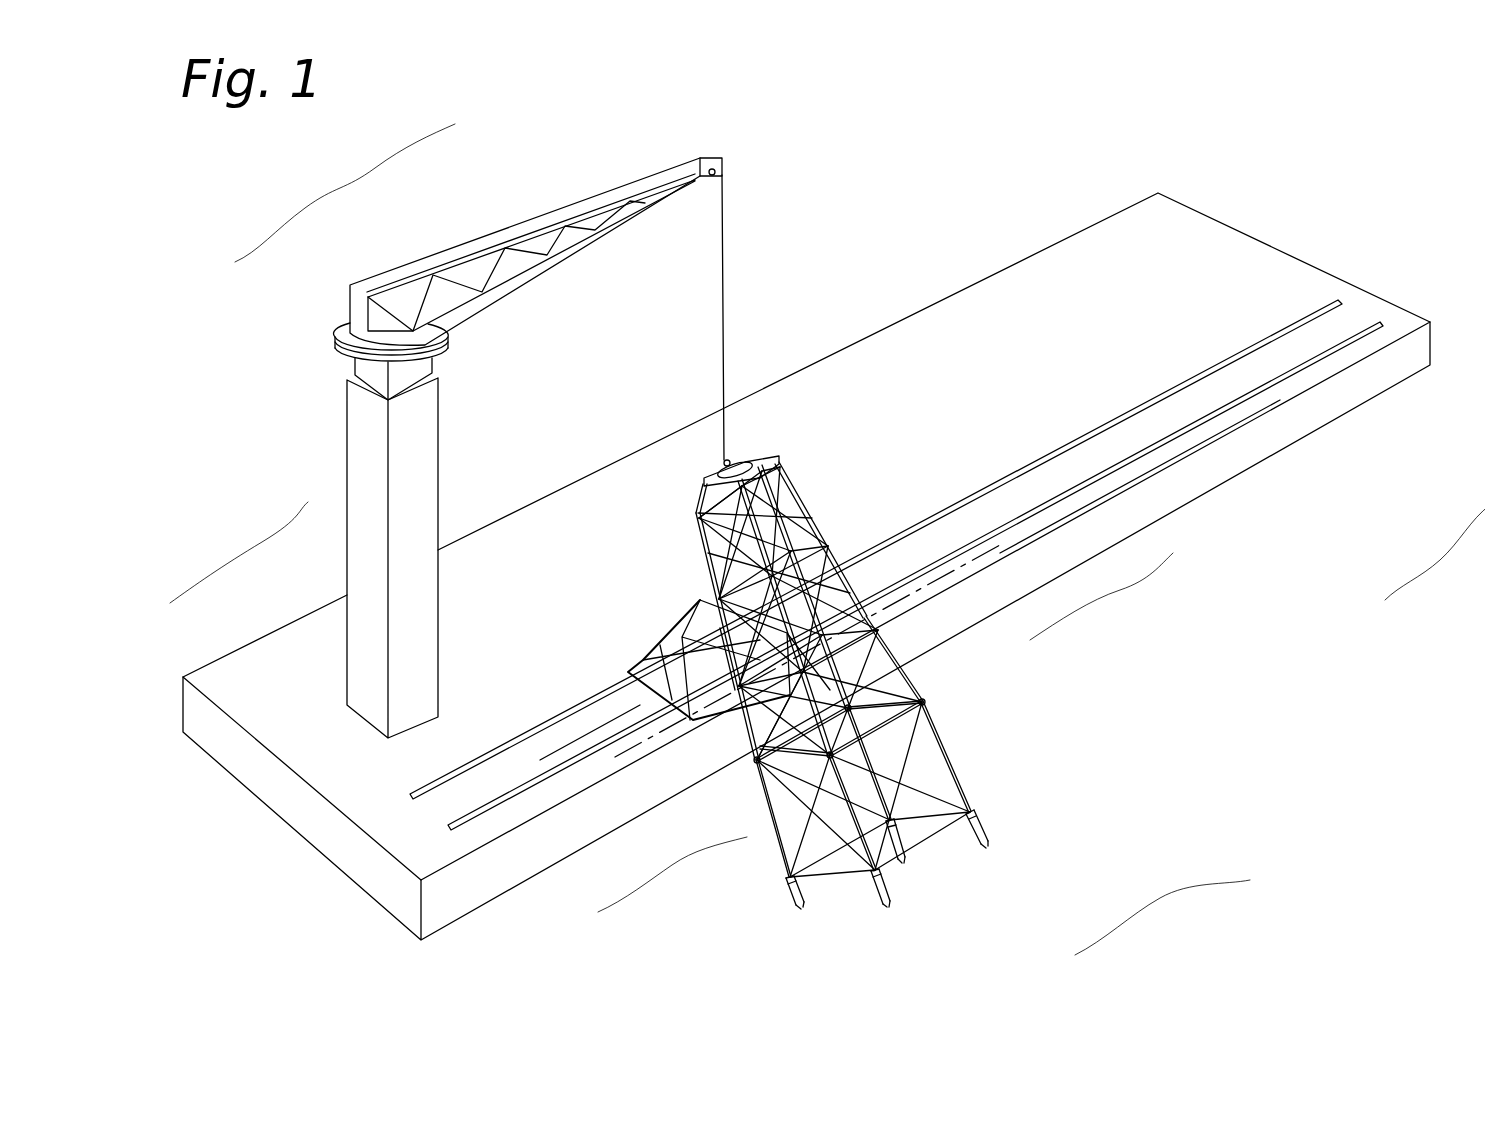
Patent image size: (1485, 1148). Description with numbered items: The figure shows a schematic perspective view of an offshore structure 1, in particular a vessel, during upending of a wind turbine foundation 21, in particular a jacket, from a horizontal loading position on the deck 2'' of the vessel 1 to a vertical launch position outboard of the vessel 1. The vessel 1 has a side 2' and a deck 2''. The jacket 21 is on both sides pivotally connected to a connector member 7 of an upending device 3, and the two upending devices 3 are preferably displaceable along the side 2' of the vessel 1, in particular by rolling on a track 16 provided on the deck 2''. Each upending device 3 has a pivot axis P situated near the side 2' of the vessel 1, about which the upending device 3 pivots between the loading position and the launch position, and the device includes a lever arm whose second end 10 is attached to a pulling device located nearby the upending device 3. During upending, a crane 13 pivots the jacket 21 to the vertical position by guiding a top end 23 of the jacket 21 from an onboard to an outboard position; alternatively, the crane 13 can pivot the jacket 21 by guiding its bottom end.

The offshore structure 1 is at (884, 316).
The side 2' is at (915, 576).
The deck 2'' is at (1140, 473).
The upending device 3 is at (640, 712).
The connector member 7 is at (925, 700).
The second end 10 is at (700, 602).
The crane 13 is at (417, 448).
The track 16 is at (1017, 522).
The wind turbine foundation 21 is at (840, 542).
The top end 23 is at (750, 453).
The pivot axis P is at (934, 579).